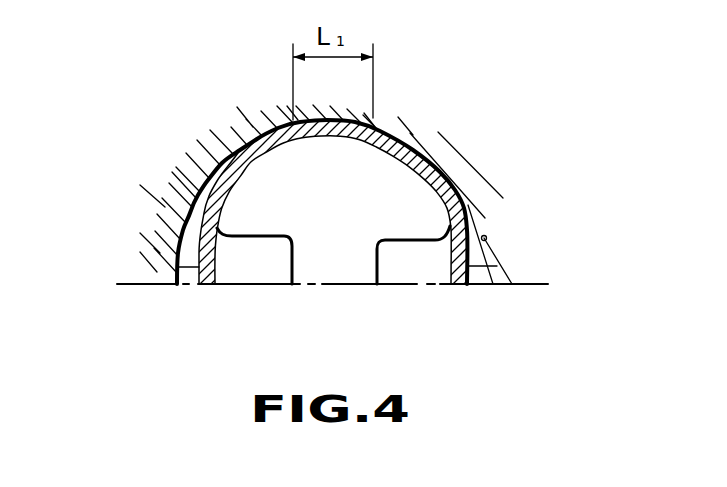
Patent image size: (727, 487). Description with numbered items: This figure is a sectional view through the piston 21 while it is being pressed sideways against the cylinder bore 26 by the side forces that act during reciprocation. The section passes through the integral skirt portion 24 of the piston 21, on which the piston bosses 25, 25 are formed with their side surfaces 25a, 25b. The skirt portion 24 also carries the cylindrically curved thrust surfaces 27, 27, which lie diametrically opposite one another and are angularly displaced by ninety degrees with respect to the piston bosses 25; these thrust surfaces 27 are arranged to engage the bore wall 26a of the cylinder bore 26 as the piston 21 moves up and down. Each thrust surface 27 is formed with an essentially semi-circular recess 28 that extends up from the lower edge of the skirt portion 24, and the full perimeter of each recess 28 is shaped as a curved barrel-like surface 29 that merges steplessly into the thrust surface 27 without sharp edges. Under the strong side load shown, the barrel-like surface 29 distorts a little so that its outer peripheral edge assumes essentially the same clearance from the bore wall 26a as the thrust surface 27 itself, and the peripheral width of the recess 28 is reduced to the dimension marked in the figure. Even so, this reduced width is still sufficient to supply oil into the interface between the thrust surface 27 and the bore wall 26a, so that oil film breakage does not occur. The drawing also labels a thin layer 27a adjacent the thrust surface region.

The piston 21 is at (478, 208).
The skirt portion 24 is at (207, 214).
The piston bosses 25 is at (260, 265).
The side surface of piston boss 25a is at (175, 268).
The side surface of piston boss 25b is at (494, 266).
The cylinder bore 26 is at (457, 161).
The bore wall 26a is at (487, 239).
The thrust surfaces 27 is at (410, 124).
The surrounding material layer 27a is at (483, 196).
The recesses 28 is at (370, 118).
The barrel-like surface 29 is at (297, 117).